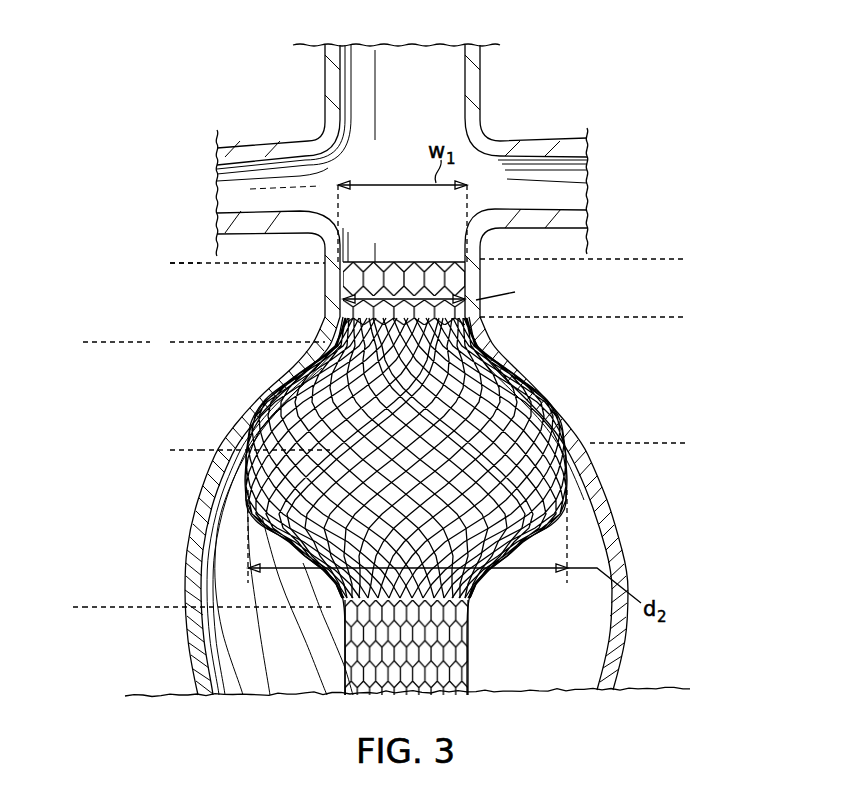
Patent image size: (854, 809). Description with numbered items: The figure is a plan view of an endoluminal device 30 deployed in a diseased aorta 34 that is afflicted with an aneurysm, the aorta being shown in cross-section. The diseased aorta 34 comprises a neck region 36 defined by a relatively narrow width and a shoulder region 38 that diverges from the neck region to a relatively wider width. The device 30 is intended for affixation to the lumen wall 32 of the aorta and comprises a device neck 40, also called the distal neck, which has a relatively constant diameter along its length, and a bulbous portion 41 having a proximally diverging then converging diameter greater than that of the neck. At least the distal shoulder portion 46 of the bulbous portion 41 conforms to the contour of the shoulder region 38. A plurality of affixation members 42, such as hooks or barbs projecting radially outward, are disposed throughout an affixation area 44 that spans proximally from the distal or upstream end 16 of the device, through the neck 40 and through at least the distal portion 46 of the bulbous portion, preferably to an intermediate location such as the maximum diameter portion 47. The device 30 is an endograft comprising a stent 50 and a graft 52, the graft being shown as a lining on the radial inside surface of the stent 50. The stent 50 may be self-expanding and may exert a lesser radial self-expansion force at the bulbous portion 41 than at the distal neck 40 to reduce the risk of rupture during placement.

The distal or upstream end 16 is at (428, 240).
The endoluminal device 30 is at (490, 496).
The lumen wall 32 is at (407, 507).
The diseased aorta 34 is at (592, 400).
The neck region 36 is at (685, 259).
The shoulder region 38 is at (685, 317).
The device neck 40 is at (267, 263).
The bulbous portion 41 is at (73, 345).
The affixation members 42 is at (497, 347).
The affixation area 44 is at (170, 265).
The distal shoulder portion of bulbous portion 46 is at (252, 378).
The maximum diameter portion 47 is at (566, 467).
The stent 50 is at (462, 635).
The graft 52 is at (456, 654).